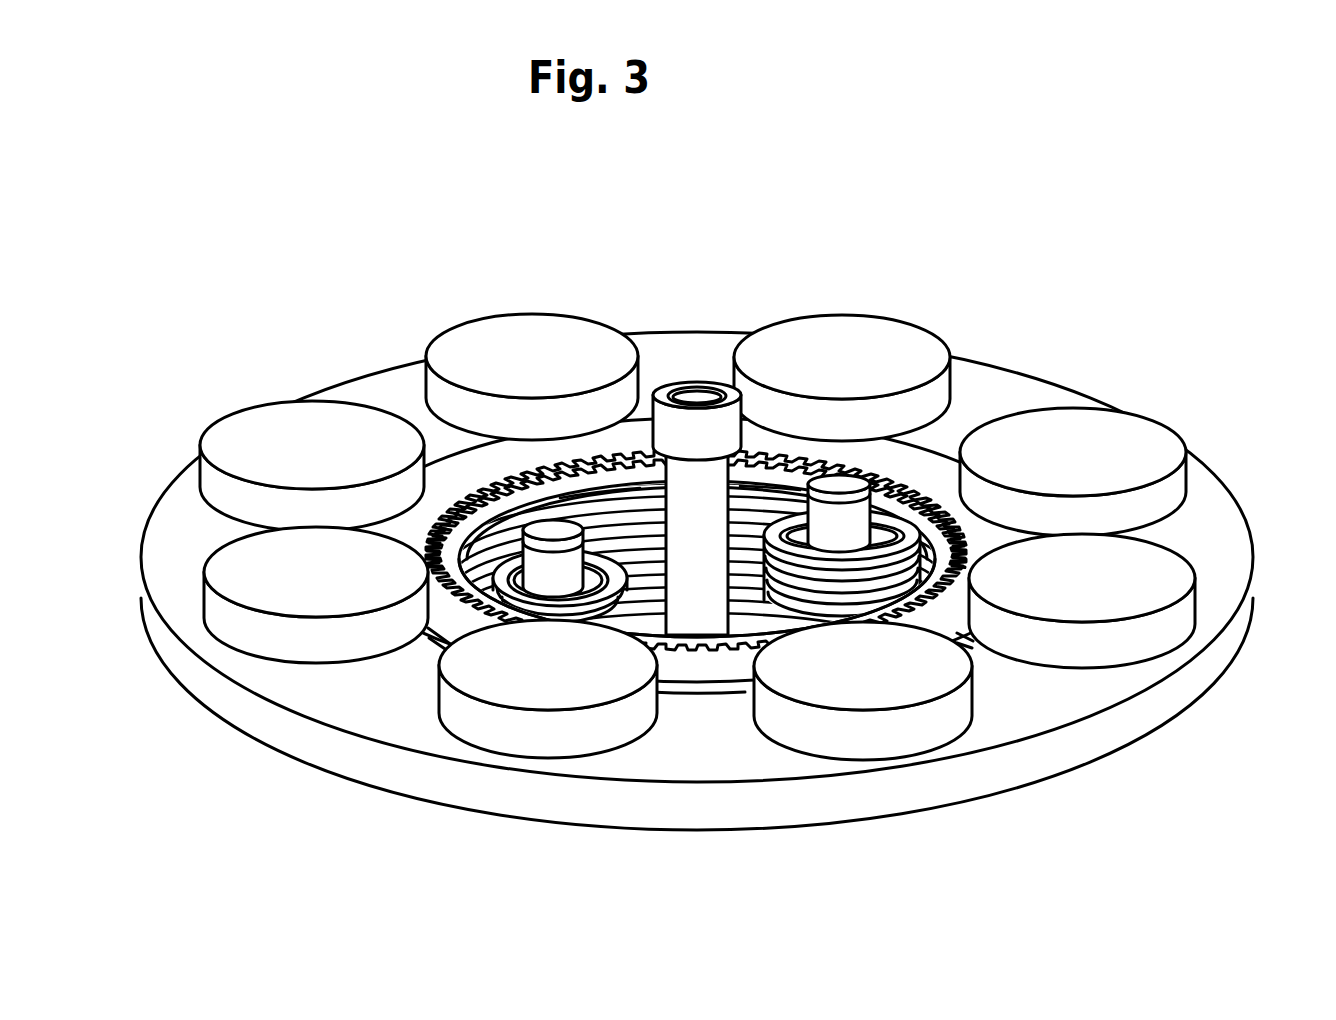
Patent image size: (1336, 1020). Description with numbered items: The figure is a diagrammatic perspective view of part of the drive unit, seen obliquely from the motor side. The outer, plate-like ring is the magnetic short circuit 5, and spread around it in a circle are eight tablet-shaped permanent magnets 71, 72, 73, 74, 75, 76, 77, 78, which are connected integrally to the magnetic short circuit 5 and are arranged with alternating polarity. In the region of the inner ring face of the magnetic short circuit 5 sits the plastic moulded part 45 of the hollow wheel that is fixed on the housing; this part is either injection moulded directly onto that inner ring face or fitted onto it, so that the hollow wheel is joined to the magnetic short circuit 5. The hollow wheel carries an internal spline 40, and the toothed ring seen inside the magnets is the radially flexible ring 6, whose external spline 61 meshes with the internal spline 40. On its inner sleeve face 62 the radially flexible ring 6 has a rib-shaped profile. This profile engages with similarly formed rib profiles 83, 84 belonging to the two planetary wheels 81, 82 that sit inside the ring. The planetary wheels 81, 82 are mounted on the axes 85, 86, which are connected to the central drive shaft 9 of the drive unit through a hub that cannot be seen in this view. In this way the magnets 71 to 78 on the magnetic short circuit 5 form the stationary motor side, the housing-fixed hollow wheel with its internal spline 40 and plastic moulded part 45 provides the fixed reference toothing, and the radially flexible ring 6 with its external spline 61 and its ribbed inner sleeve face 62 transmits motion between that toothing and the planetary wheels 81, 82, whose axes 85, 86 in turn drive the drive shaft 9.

The magnetic short circuit 5 is at (1045, 712).
The radially flexible ring 6 is at (632, 542).
The drive shaft 9 is at (693, 437).
The internal spline 40 is at (676, 438).
The plastic moulded part 45 is at (913, 467).
The external spline 61 is at (507, 470).
The inner sleeve face 62 is at (647, 573).
The permanent magnet 71 is at (905, 357).
The permanent magnet 72 is at (1117, 443).
The permanent magnet 73 is at (1147, 590).
The permanent magnet 74 is at (915, 685).
The permanent magnet 75 is at (535, 697).
The permanent magnet 76 is at (283, 597).
The permanent magnet 77 is at (242, 438).
The permanent magnet 78 is at (577, 352).
The planetary wheel 81 is at (603, 548).
The planetary wheel 82 is at (774, 513).
The rib profile 83 is at (797, 578).
The rib profile 84 is at (490, 592).
The axis 85 is at (550, 525).
The axis 86 is at (847, 472).